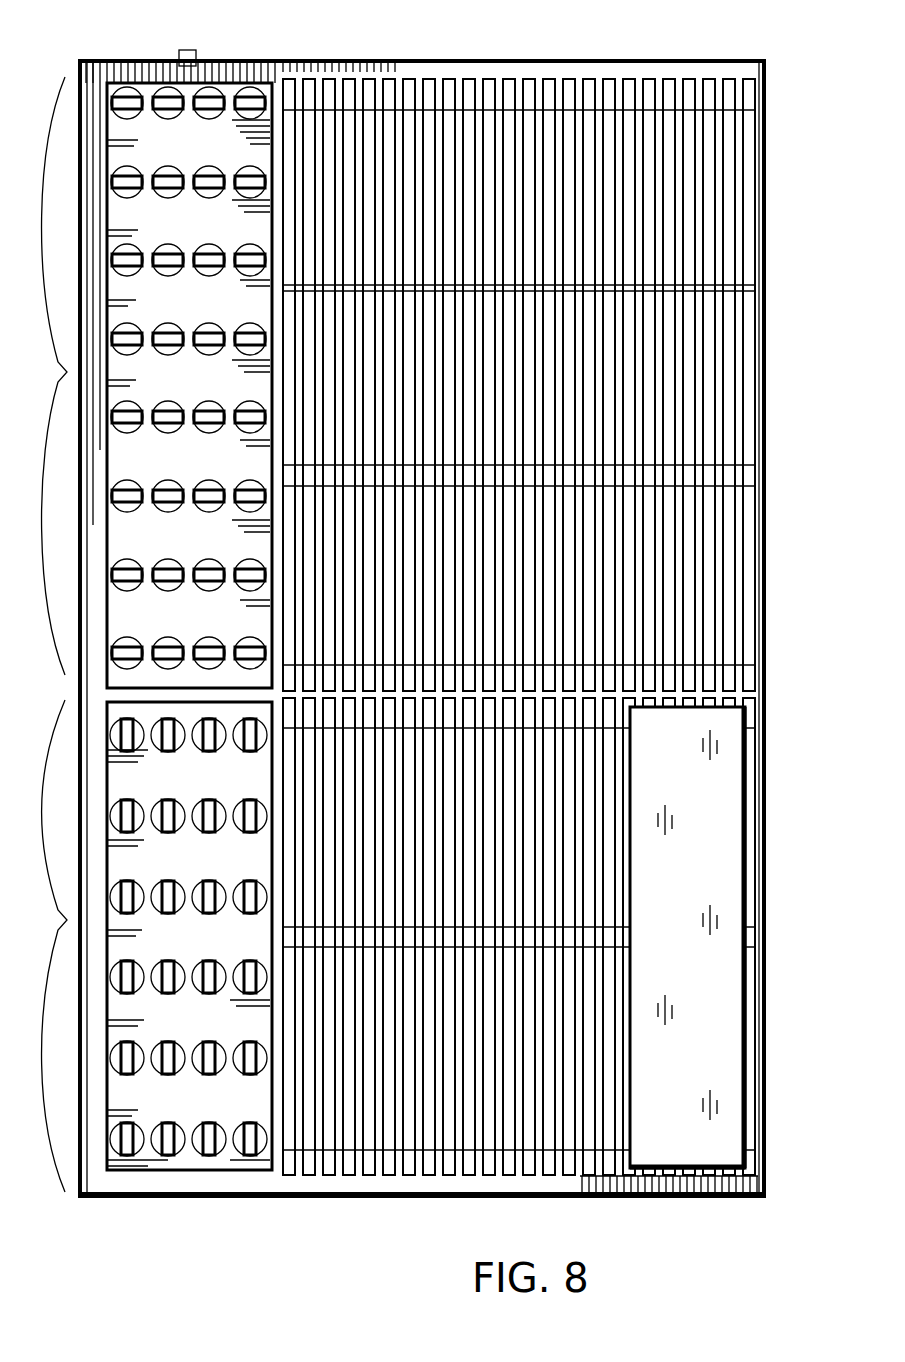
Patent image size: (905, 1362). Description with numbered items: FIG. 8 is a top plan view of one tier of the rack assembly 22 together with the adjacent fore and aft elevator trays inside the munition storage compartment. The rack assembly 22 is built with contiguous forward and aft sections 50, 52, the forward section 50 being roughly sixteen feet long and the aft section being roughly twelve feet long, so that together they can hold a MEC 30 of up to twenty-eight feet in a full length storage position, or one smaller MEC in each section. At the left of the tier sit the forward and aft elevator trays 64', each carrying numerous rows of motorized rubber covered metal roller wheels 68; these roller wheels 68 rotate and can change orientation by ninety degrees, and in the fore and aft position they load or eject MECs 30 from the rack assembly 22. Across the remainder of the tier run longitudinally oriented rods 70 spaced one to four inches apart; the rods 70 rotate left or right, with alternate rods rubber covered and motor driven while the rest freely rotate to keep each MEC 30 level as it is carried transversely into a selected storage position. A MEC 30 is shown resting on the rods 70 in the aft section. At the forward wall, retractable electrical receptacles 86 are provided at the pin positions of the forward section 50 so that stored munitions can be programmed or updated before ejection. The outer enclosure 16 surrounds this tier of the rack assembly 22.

The housing frame 16 is at (483, 61).
The rack assembly 22 is at (568, 630).
The MEC 30 is at (708, 812).
The forward section 50 is at (47, 376).
The aft section 52 is at (47, 946).
The forward elevator tray 64' is at (189, 347).
The roller wheels 68 is at (212, 102).
The rods 70 is at (708, 100).
The retractable electrical receptacles 86 is at (190, 50).